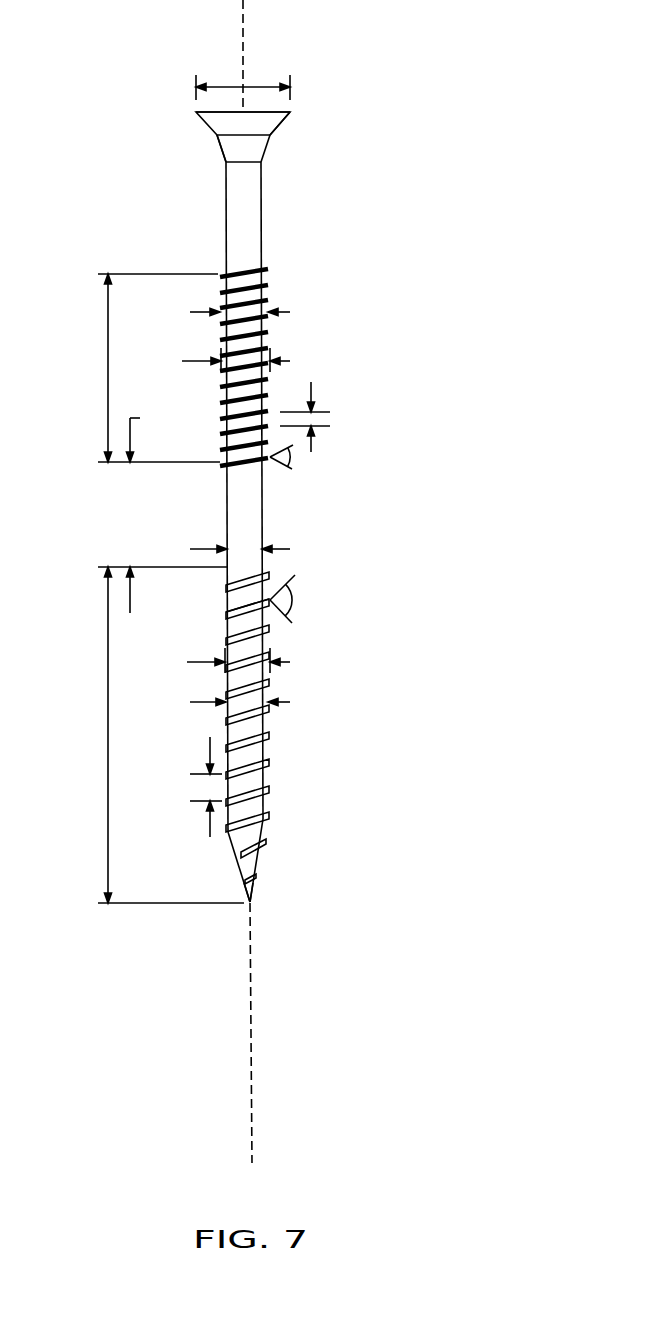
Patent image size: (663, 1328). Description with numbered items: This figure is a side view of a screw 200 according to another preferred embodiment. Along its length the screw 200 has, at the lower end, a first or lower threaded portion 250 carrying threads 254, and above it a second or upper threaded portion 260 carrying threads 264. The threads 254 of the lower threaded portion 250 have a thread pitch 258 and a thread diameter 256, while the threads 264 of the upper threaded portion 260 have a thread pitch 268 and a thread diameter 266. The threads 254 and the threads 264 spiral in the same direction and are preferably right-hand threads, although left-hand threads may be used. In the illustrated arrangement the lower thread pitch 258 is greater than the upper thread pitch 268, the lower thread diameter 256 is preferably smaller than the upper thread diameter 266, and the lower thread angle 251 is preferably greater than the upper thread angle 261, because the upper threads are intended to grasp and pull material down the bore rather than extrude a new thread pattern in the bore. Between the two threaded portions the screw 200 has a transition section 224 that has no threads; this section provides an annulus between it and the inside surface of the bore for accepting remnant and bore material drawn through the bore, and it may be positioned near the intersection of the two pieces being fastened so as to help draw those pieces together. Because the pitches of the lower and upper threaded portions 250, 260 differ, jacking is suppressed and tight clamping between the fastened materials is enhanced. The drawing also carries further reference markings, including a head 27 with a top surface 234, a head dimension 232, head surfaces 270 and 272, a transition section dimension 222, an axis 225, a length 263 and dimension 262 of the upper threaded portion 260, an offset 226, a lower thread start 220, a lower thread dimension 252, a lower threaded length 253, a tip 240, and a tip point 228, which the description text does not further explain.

The screw 200 is at (362, 581).
The head 27 is at (255, 153).
The top surface of head 234 is at (228, 112).
The head diameter 232 is at (263, 82).
The lower bearing surface of head 270 is at (217, 137).
The upper conical surface of head 272 is at (274, 119).
The transition section 224 is at (245, 502).
The shank diameter 222 is at (290, 549).
The longitudinal axis 225 is at (253, 978).
The upper threaded portion 260 is at (228, 440).
The threads 264 is at (262, 273).
The upper thread major diameter 262 is at (290, 312).
The upper threaded length 263 is at (108, 364).
The thread diameter 266 is at (298, 362).
The thread pitch 268 is at (313, 383).
The upper thread end offset 226 is at (140, 418).
The thread angle 261 is at (297, 460).
The start of lower thread 220 is at (238, 598).
The threads 254 is at (247, 610).
The thread angle 251 is at (298, 598).
The thread diameter 256 is at (300, 662).
The lower thread major diameter 252 is at (292, 702).
The lower threaded portion 250 is at (260, 775).
The lower threaded length 253 is at (108, 732).
The thread pitch 258 is at (205, 832).
The tapered tip 240 is at (253, 870).
The tip point 228 is at (249, 904).